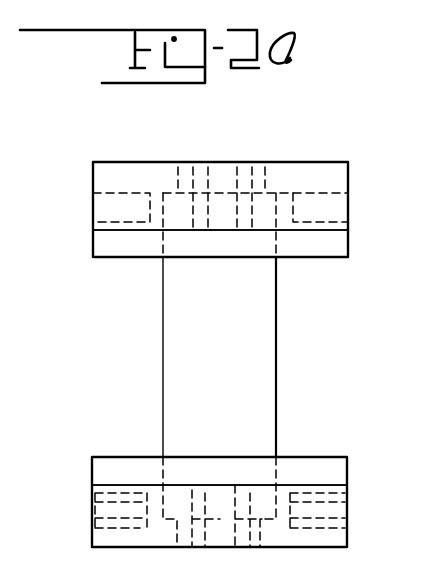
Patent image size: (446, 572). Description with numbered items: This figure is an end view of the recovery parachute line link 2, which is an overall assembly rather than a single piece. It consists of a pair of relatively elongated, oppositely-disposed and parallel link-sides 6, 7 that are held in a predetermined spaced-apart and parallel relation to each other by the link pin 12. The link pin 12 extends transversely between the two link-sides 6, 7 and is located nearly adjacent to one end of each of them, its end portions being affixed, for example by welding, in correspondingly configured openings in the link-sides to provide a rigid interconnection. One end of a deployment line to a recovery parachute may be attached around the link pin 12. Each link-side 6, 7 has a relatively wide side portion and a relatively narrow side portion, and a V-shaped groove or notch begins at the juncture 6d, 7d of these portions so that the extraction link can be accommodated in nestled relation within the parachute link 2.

The recovery parachute line link 2 is at (296, 306).
The link-side 7 is at (350, 177).
The juncture 7d is at (92, 256).
The link pin 12 is at (162, 355).
The link-side 6 is at (90, 513).
The juncture 6d is at (348, 468).